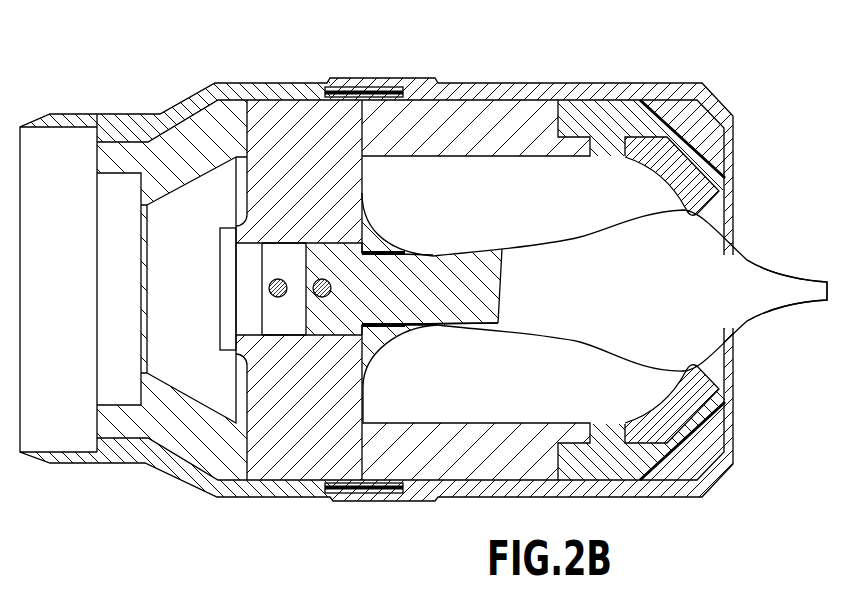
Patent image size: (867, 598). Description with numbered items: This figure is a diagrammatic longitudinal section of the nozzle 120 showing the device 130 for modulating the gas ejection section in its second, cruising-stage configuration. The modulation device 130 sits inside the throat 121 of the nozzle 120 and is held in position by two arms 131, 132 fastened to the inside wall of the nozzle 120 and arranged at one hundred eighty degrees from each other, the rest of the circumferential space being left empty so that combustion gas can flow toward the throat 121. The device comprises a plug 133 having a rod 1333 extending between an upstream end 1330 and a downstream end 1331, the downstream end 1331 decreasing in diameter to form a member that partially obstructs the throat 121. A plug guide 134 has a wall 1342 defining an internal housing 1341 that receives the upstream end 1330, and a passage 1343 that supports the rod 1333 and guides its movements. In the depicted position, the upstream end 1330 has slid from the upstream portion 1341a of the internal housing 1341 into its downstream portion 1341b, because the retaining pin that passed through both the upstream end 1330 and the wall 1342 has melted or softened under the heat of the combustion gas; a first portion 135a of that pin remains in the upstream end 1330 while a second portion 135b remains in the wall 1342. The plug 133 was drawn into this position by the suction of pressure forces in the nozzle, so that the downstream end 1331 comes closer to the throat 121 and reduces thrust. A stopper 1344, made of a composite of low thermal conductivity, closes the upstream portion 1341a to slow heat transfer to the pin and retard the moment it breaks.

The nozzle 120 is at (580, 66).
The throat 121 is at (697, 211).
The device for modulating the gas ejection section 130 is at (471, 229).
The arm 131 is at (291, 470).
The arm 132 is at (300, 97).
The plug 133 is at (602, 232).
The plug guide 134 is at (391, 334).
The first portion of the pin 135a is at (312, 294).
The second portion of the pin 135b is at (270, 283).
The upstream end 1330 is at (333, 317).
The downstream end 1331 is at (713, 305).
The rod 1333 is at (503, 275).
The internal housing 1341 is at (293, 255).
The upstream portion 1341a is at (286, 333).
The downstream portion 1341b is at (377, 332).
The wall 1342 is at (280, 256).
The passage 1343 is at (437, 321).
The stopper 1344 is at (227, 302).